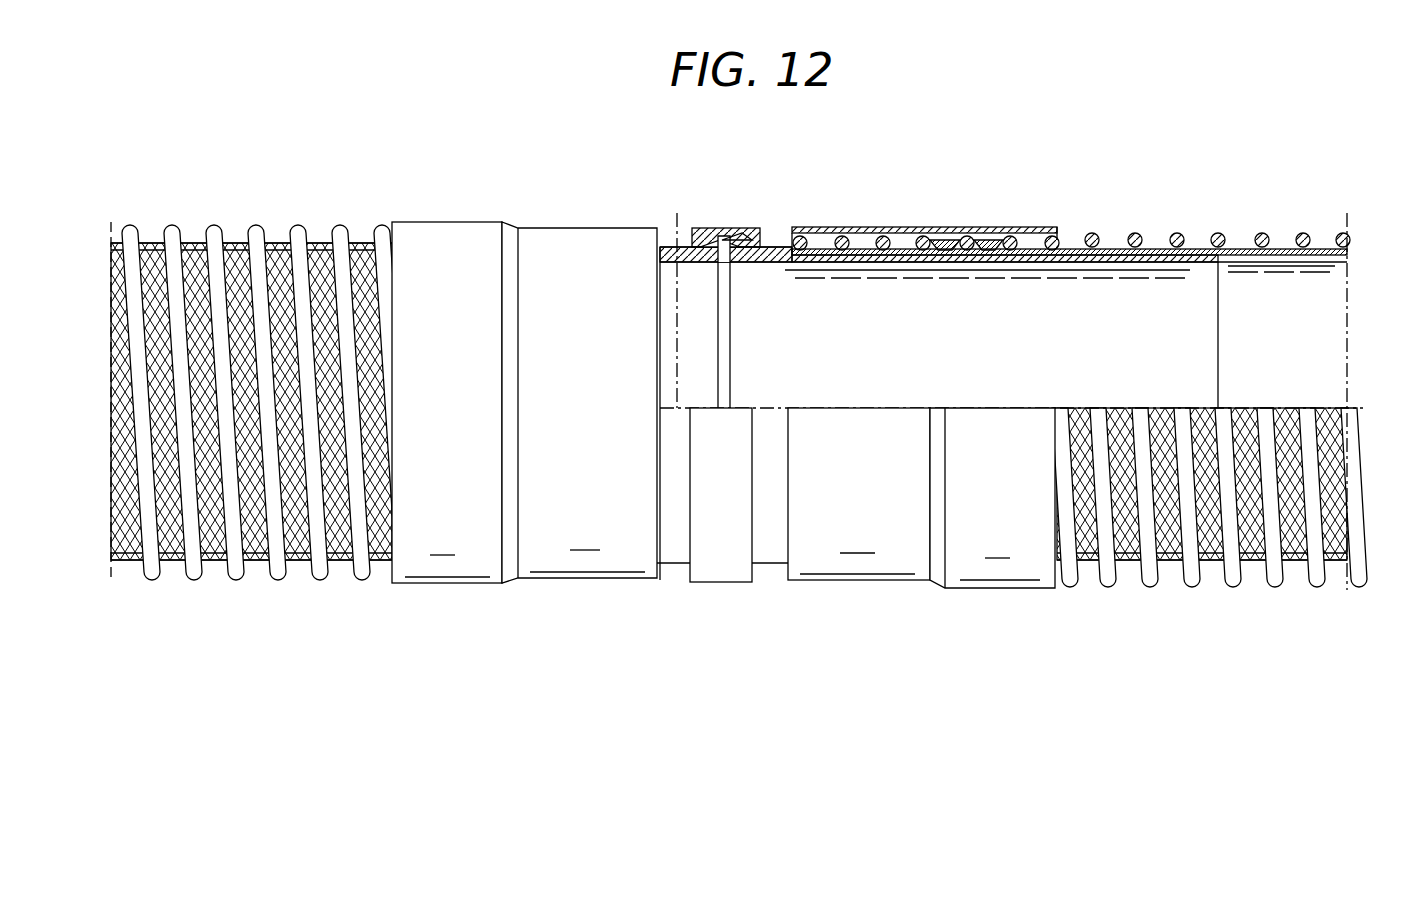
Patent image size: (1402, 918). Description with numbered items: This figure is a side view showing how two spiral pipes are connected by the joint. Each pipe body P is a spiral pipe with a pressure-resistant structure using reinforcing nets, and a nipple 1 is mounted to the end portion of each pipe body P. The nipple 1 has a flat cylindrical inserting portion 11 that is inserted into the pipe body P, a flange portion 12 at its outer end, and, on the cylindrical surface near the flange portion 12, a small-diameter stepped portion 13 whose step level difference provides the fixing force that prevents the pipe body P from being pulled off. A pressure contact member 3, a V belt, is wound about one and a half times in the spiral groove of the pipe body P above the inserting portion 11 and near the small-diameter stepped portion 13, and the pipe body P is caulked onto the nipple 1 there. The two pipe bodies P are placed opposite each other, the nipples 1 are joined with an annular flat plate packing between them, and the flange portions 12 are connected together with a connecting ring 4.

The nipple 1 is at (785, 248).
The pressure contact member 3 is at (990, 230).
The connecting ring 4 is at (706, 228).
The inserting portion 11 is at (1203, 250).
The flange portion 12 is at (741, 240).
The small-diameter stepped portion 13 is at (857, 247).
The pipe body P is at (110, 481).